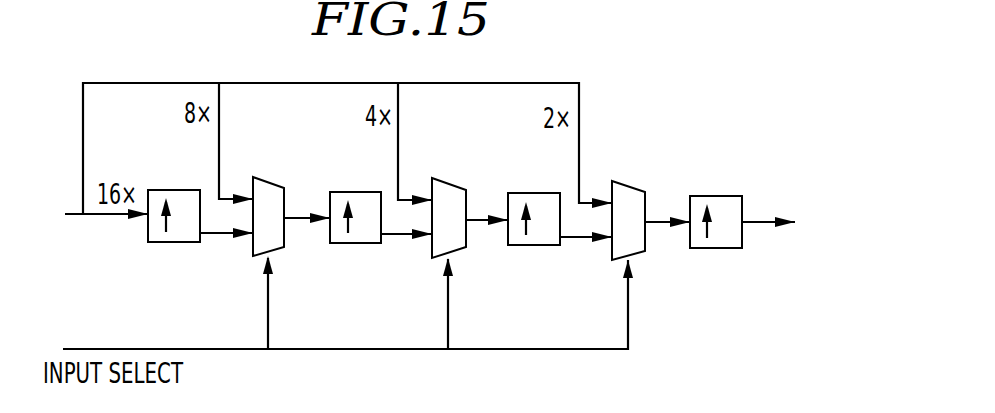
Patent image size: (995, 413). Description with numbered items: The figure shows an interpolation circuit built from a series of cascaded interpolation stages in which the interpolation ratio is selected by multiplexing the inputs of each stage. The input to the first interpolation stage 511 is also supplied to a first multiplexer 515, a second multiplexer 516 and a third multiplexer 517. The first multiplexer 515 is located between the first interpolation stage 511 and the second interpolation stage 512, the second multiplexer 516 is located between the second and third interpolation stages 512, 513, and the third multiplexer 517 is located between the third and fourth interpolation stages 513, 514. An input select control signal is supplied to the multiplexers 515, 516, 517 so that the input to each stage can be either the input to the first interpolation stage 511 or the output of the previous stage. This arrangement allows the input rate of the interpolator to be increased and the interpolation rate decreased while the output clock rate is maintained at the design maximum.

The first interpolation stage 511 is at (175, 242).
The second interpolation stage 512 is at (353, 243).
The third interpolation stage 513 is at (533, 245).
The fourth interpolation stage 514 is at (715, 248).
The first multiplexer 515 is at (273, 178).
The second multiplexer 516 is at (452, 180).
The third multiplexer 517 is at (632, 182).